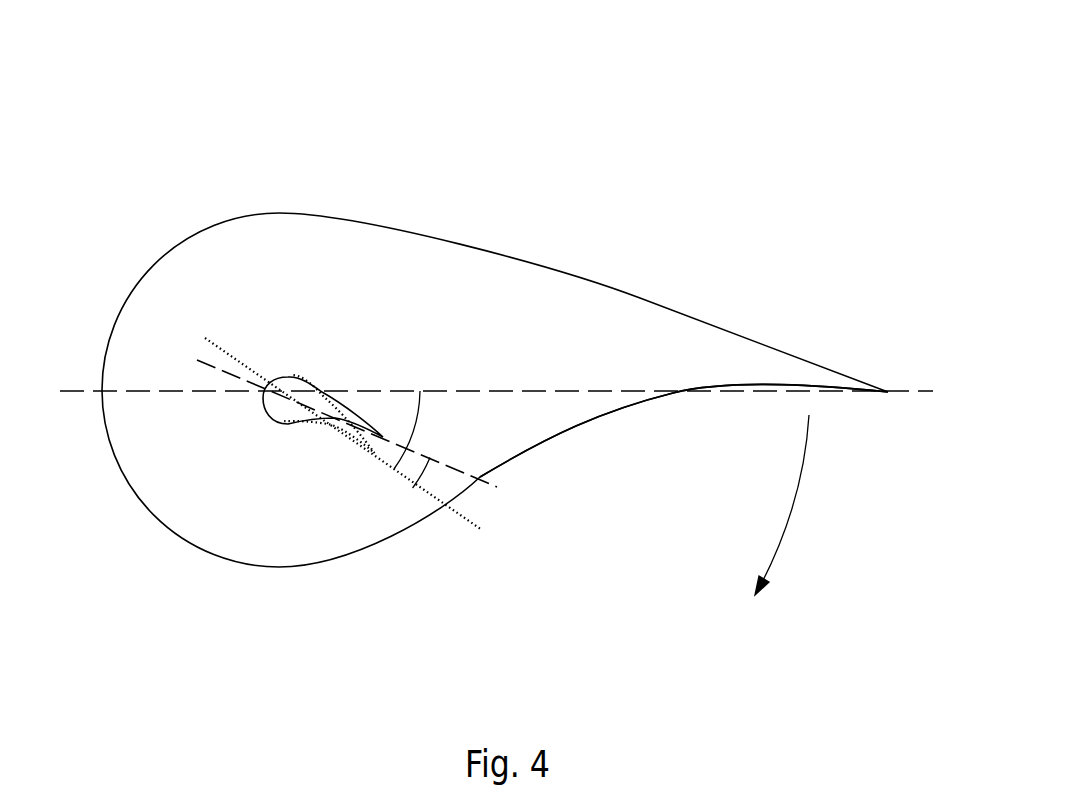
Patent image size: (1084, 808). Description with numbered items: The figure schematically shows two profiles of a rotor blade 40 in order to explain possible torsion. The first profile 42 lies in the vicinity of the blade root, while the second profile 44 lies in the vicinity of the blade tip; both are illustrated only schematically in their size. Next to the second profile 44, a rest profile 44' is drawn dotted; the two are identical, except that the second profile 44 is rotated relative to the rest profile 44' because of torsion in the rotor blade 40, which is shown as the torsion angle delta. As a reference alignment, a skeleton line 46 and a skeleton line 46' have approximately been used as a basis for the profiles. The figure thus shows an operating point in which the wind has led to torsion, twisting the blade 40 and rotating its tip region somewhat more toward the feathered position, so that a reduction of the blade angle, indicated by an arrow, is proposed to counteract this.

The rotor blade 40 is at (496, 336).
The first profile 42 is at (407, 230).
The second profile 44 is at (323, 360).
The rest profile 44' is at (319, 452).
The skeleton line 46 is at (684, 445).
The skeleton line 46' is at (364, 503).